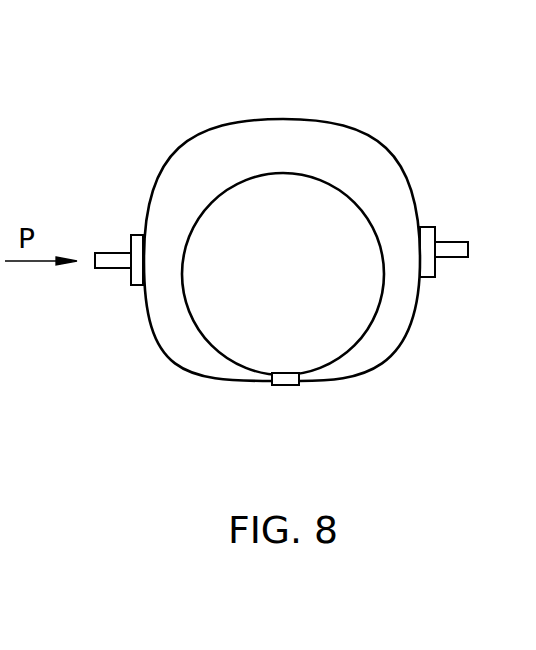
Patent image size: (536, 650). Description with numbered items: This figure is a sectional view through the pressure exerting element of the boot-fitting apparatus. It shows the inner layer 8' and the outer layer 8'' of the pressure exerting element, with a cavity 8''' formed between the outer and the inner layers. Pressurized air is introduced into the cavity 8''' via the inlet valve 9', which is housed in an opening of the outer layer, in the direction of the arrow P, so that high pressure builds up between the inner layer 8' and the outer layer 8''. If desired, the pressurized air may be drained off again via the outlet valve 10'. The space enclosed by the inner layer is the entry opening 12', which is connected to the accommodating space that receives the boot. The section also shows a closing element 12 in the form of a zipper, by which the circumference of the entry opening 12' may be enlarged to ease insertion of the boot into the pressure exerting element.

The inner layer 8' is at (282, 217).
The outer layer 8'' is at (321, 237).
The cavity 8''' is at (286, 150).
The entry opening 12' is at (289, 264).
The inlet valve 9' is at (119, 300).
The outlet valve 10' is at (472, 280).
The closing element 12 is at (302, 419).